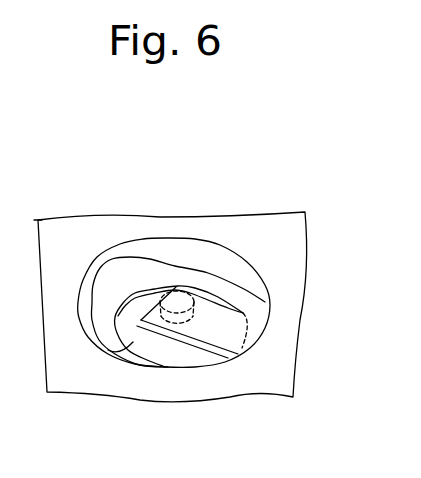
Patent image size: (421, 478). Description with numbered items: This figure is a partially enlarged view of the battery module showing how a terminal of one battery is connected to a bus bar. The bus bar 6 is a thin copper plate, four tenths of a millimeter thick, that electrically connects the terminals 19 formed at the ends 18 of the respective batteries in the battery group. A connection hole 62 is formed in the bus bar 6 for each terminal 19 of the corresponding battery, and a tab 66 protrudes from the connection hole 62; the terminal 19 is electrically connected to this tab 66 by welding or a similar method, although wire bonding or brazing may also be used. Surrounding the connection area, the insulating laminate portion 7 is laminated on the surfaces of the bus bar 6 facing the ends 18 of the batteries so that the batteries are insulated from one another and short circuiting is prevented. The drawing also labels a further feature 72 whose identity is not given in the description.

The insulating laminate portion 7 is at (288, 251).
The recess 72 is at (100, 284).
The connection hole 62 is at (142, 282).
The bus bar 6 is at (242, 290).
The tab 66 is at (218, 316).
The terminal 19 is at (178, 308).
The end 18 is at (133, 342).